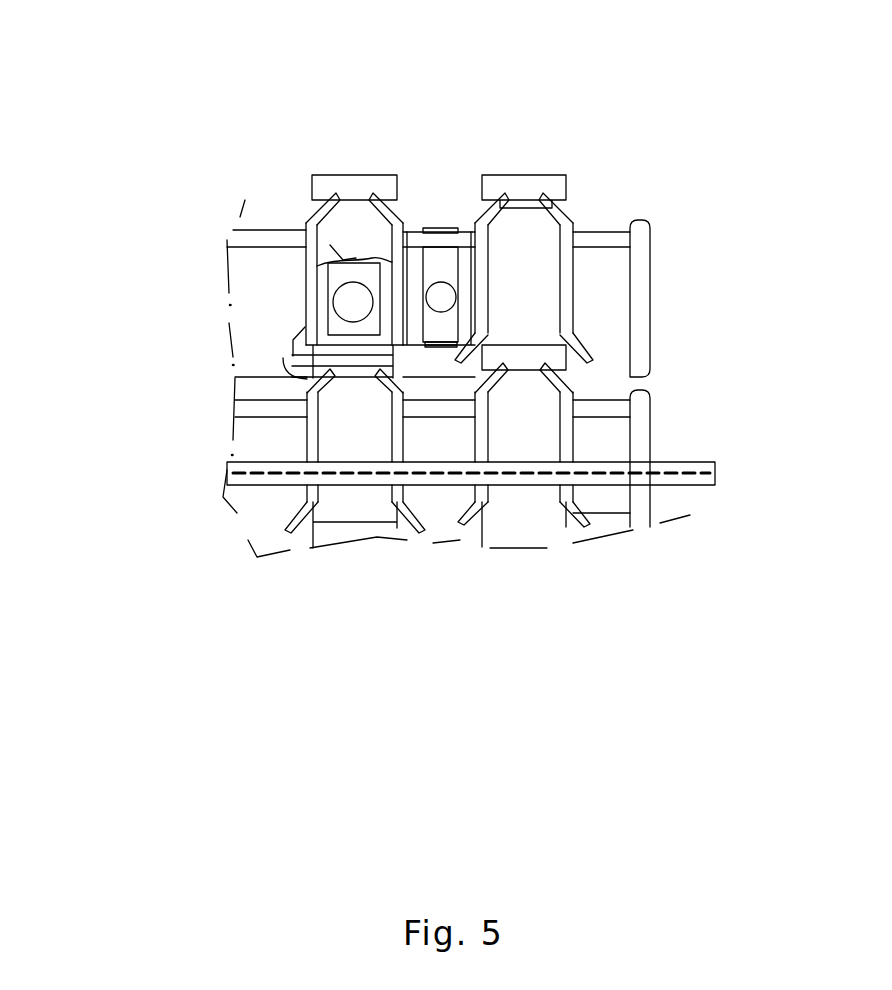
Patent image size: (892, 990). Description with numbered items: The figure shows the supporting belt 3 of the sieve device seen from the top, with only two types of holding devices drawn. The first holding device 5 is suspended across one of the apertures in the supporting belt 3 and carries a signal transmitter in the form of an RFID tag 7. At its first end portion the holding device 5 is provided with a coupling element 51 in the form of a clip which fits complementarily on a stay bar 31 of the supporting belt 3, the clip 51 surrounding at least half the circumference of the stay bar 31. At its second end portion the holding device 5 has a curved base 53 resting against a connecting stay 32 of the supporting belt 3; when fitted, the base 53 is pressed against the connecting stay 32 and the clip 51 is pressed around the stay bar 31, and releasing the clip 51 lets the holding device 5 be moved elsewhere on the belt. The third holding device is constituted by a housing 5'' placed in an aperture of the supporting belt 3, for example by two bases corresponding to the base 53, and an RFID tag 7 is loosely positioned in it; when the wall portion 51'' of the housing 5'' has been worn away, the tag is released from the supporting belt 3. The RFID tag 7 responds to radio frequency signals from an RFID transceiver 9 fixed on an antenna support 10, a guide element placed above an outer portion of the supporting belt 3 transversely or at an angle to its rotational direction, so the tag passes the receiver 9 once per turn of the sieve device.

The supporting belt 3 is at (648, 130).
The stay bar 31 is at (420, 227).
The coupling element 51 is at (440, 142).
The holding device 5 is at (456, 196).
The wall portion 51'' is at (213, 209).
The housing 5'' is at (235, 280).
The RFID tag 7 is at (333, 300).
The connecting stay 32 is at (313, 380).
The RFID transceiver 9 is at (664, 472).
The antenna support 10 is at (690, 485).
The curved base 53 is at (441, 348).